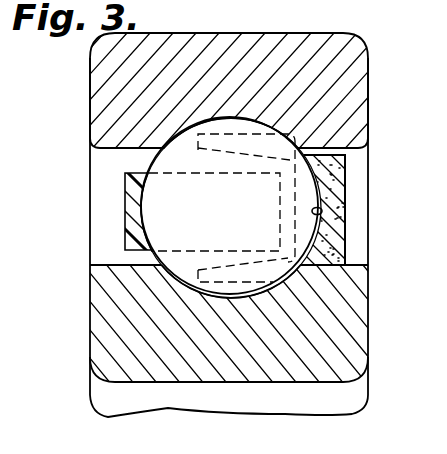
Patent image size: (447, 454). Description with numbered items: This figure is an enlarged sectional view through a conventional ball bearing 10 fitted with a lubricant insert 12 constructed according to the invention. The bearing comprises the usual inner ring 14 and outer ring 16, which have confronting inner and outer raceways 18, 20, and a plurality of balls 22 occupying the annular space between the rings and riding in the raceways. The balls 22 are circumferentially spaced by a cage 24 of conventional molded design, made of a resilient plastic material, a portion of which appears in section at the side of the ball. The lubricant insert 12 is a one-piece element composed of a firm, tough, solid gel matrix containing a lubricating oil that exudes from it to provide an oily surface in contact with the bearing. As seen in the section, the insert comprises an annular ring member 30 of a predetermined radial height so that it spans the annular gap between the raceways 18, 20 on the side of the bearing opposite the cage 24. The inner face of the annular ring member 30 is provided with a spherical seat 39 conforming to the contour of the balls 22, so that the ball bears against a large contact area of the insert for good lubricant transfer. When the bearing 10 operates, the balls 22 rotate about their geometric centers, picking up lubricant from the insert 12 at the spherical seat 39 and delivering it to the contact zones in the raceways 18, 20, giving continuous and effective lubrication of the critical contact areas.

The ball bearing 10 is at (368, 53).
The lubricant insert 12 is at (344, 185).
The inner ring 14 is at (172, 375).
The outer ring 16 is at (351, 104).
The inner raceway 18 is at (182, 279).
The outer raceway 20 is at (174, 140).
The balls 22 is at (242, 244).
The cage 24 is at (127, 203).
The annular ring member 30 is at (337, 241).
The spherical seat 39 is at (321, 211).